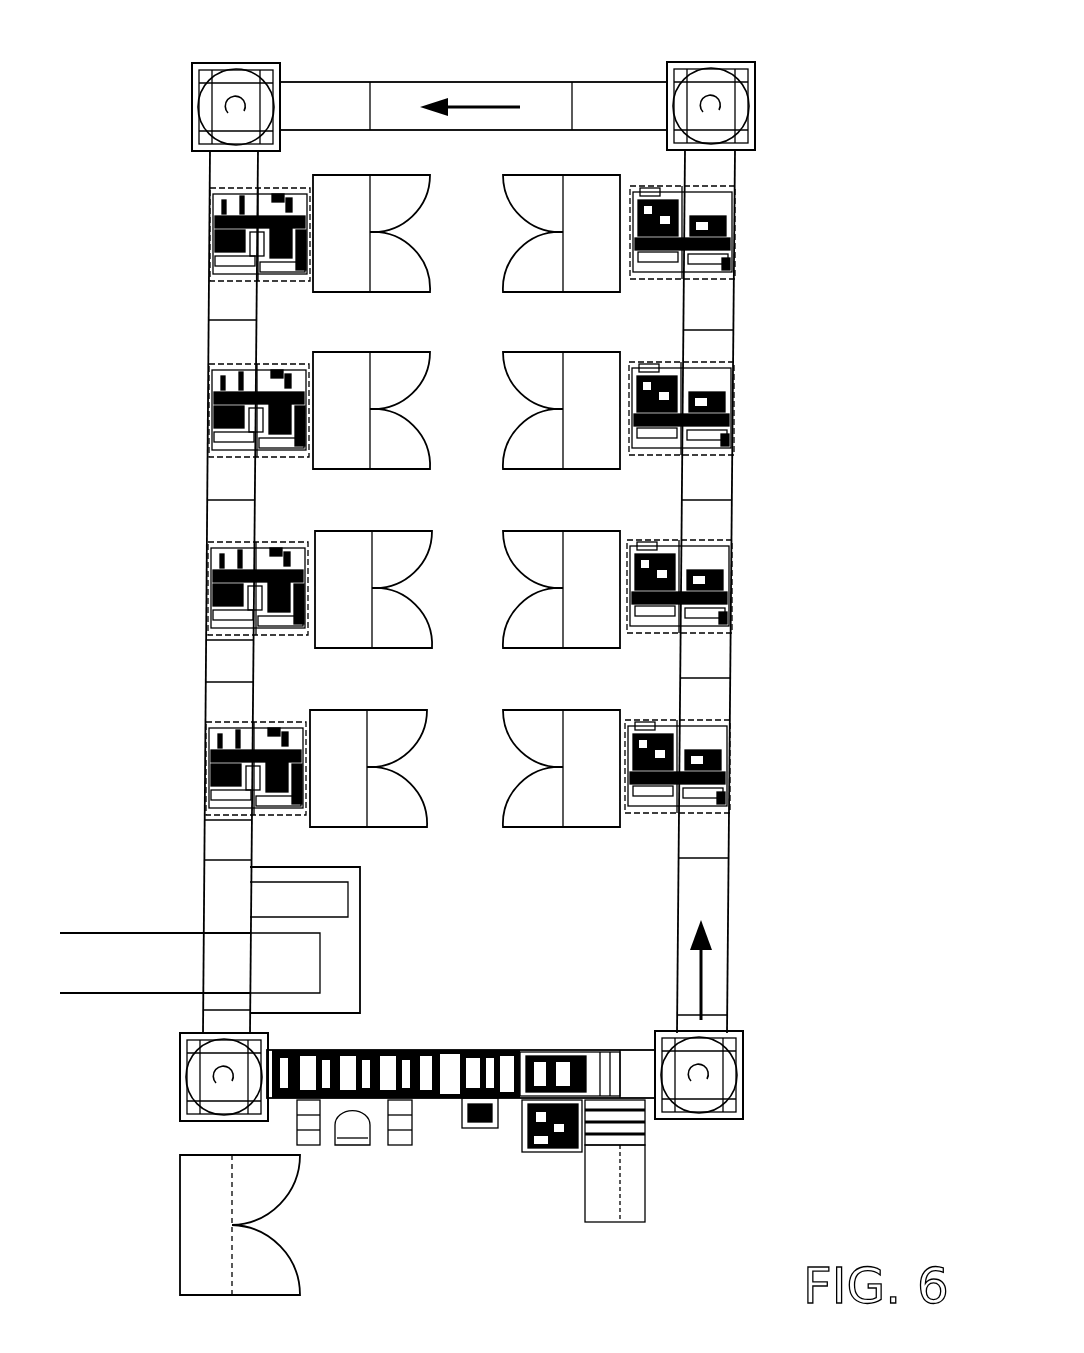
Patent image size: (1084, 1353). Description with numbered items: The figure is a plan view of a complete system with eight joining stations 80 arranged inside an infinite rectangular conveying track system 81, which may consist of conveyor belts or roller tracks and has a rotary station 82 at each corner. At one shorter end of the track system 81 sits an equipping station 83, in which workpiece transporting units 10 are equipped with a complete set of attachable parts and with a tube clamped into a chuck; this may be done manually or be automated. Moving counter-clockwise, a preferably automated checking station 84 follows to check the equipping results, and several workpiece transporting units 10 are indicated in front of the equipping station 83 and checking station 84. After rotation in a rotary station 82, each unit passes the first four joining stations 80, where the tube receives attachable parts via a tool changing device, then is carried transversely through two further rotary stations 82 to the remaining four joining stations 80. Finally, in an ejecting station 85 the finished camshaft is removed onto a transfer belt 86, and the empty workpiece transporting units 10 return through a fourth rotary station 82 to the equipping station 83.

The workpiece transporting unit 10 is at (568, 1048).
The joining station 80 is at (274, 290).
The conveying track system 81 is at (487, 92).
The rotary station 82 is at (246, 88).
The equipping station 83 is at (369, 1172).
The checking station 84 is at (540, 1168).
The ejecting station 85 is at (372, 958).
The transfer belt 86 is at (150, 940).